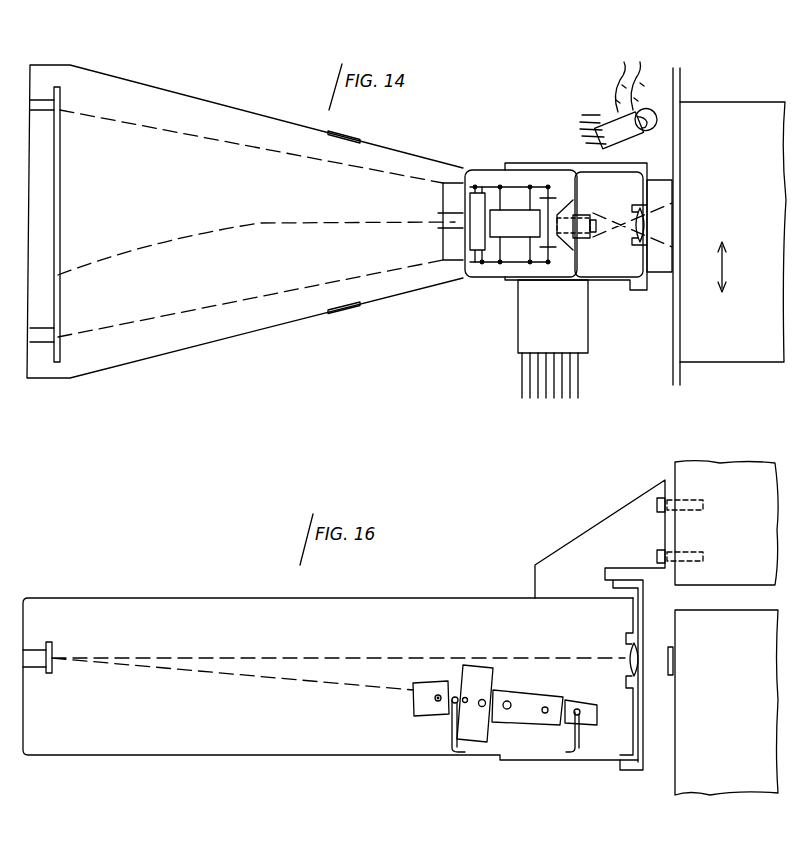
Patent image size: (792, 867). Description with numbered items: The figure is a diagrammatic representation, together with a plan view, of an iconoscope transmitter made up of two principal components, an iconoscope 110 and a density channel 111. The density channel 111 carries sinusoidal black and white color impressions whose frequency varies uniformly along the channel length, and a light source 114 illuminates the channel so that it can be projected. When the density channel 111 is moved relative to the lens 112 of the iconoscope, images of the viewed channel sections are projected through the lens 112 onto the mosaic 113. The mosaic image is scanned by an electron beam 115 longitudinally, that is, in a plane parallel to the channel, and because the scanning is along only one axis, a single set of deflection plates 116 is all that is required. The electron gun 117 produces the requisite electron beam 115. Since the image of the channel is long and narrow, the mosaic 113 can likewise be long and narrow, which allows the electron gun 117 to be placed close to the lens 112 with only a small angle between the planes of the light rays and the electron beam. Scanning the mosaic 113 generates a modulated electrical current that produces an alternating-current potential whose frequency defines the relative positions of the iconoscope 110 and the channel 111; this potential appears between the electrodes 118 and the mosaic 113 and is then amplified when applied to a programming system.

In FIG. 14, the iconoscope 110 is at (291, 111).
In FIG. 16, the iconoscope 110 is at (245, 590).
In FIG. 14, the density channel 111 is at (683, 72).
In FIG. 16, the density channel 111 is at (678, 670).
In FIG. 14, the lens 112 is at (645, 216).
In FIG. 16, the lens 112 is at (630, 650).
In FIG. 14, the mosaic 113 is at (62, 107).
In FIG. 16, the mosaic 113 is at (58, 652).
In FIG. 14, the light source 114 is at (628, 141).
In FIG. 14, the electron beam 115 is at (144, 242).
In FIG. 16, the electron beam 115 is at (250, 679).
In FIG. 14, the deflection plates 116 is at (438, 213).
In FIG. 16, the deflection plates 116 is at (427, 707).
In FIG. 14, the electron gun 117 is at (512, 197).
In FIG. 16, the electron gun 117 is at (570, 722).
In FIG. 14, the electrodes 118 is at (345, 139).